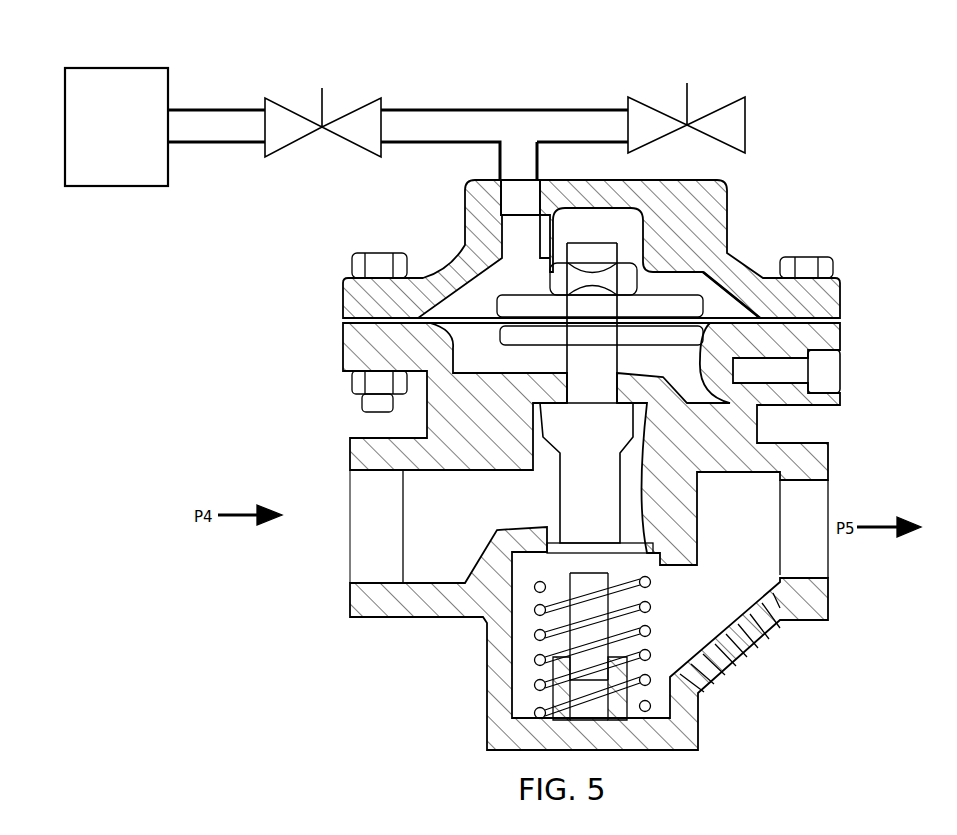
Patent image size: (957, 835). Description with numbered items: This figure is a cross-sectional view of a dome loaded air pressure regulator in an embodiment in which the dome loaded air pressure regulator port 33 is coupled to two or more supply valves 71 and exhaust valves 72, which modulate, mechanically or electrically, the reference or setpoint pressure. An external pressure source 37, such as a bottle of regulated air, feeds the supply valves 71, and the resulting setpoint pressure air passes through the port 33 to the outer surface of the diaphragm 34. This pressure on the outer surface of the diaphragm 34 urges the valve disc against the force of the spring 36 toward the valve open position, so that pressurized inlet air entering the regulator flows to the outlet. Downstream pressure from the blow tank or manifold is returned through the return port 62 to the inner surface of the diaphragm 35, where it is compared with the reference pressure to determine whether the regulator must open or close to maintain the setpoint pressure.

The dome loaded air pressure regulator port 33 is at (517, 187).
The outer surface of the diaphragm 34 is at (725, 316).
The inner surface of the diaphragm 35 is at (757, 416).
The spring 36 is at (653, 632).
The external pressure source 37 is at (107, 170).
The return port 62 is at (830, 368).
The supply valves 71 is at (381, 102).
The exhaust valves 72 is at (745, 100).